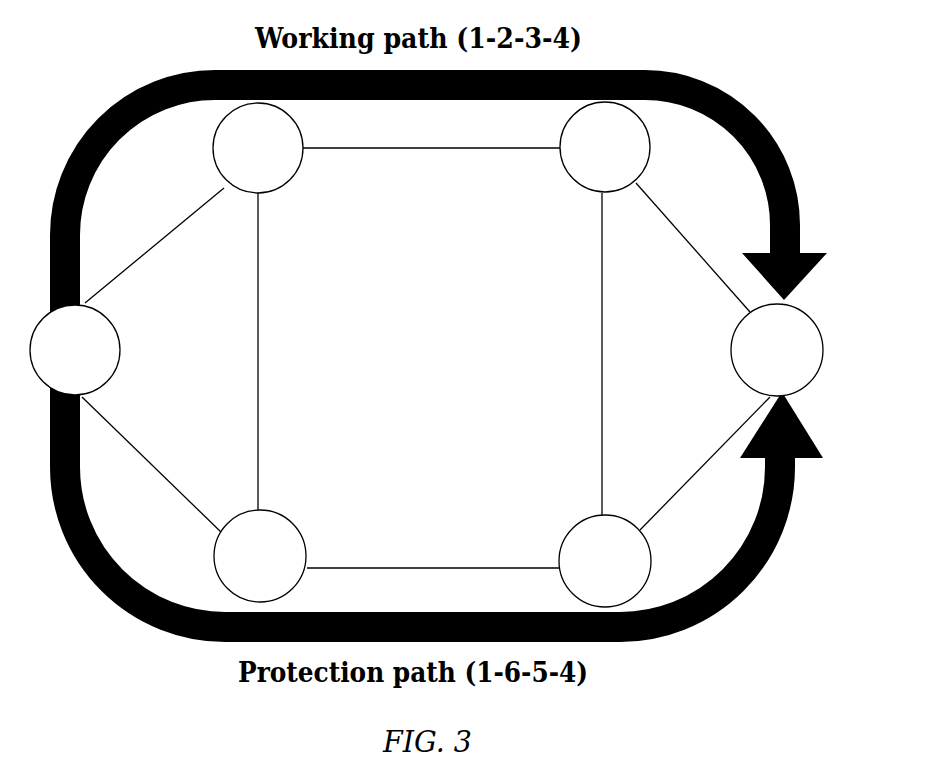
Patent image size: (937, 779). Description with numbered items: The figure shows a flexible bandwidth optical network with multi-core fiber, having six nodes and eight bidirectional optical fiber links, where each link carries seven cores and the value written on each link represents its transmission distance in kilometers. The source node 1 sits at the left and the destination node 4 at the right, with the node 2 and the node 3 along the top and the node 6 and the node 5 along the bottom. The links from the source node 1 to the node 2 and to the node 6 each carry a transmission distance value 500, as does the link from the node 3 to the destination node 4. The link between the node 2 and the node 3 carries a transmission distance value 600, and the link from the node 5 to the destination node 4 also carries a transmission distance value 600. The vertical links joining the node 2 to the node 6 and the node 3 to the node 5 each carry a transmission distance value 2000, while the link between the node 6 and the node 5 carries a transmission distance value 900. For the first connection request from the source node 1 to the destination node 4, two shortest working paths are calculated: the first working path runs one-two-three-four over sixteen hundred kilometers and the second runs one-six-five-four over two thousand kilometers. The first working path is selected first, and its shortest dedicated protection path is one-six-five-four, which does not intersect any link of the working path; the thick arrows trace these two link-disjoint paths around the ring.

The source node 1 is at (75, 350).
The network node 2 is at (258, 148).
The network node 3 is at (605, 147).
The destination node 4 is at (777, 350).
The network node 5 is at (605, 561).
The network node 6 is at (260, 556).
The transmission distance value 500 is at (417, 358).
The transmission distance value 600 is at (536, 317).
The transmission distance value 900 is at (433, 585).
The transmission distance value 2000 is at (430, 354).